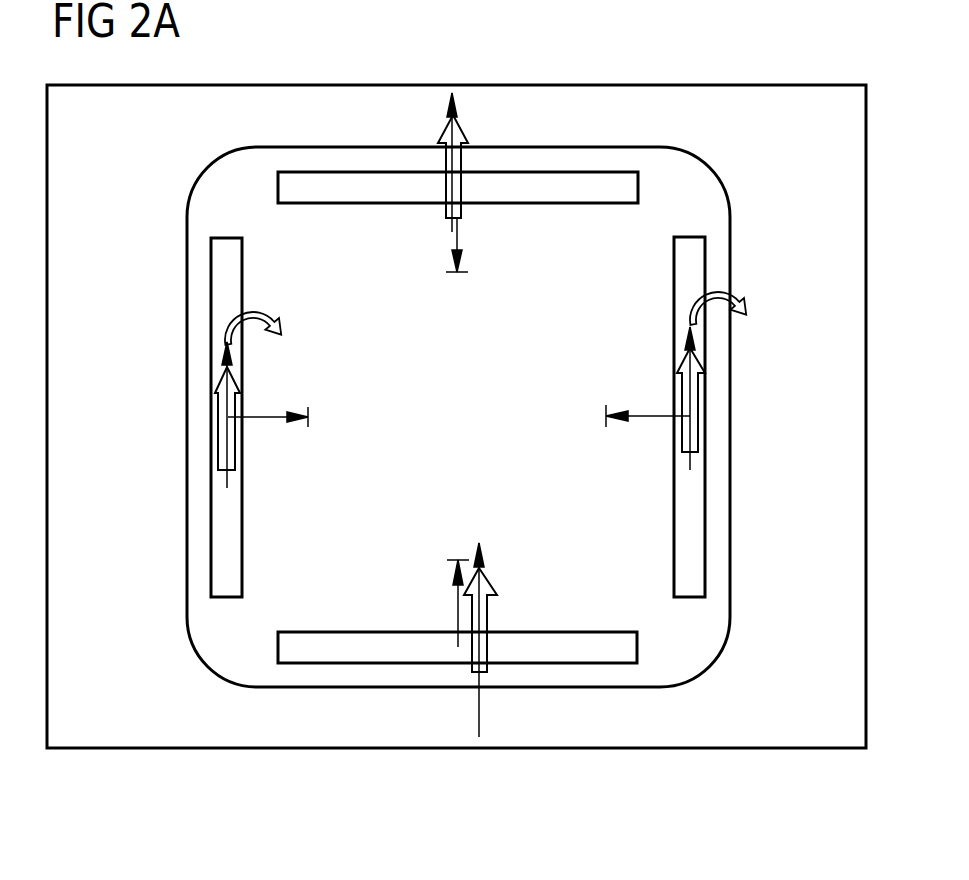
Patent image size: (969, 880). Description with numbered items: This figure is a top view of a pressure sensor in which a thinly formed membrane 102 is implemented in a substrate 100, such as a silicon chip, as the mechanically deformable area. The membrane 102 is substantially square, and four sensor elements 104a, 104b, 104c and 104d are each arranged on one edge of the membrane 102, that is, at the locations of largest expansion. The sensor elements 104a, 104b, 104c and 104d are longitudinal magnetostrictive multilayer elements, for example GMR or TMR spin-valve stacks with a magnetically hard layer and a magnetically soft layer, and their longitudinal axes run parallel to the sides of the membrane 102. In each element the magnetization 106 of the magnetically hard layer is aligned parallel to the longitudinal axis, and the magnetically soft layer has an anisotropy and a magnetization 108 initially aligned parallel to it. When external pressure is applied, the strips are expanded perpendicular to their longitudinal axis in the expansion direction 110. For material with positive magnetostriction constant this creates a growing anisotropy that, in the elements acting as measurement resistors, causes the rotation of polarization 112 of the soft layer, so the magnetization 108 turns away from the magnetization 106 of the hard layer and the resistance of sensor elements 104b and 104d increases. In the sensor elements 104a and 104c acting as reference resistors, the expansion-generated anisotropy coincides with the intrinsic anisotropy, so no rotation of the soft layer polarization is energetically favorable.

The substrate 100 is at (692, 84).
The membrane 102 is at (733, 410).
The sensor element 104a is at (357, 205).
The sensor element 104b is at (244, 517).
The sensor element 104c is at (305, 641).
The sensor element 104d is at (672, 538).
The magnetization of the magnetically hard layer 106 is at (457, 130).
The magnetization of the magnetically soft layer 108 is at (447, 103).
The expansion direction 110 is at (462, 228).
The rotation of polarization 112 is at (255, 312).